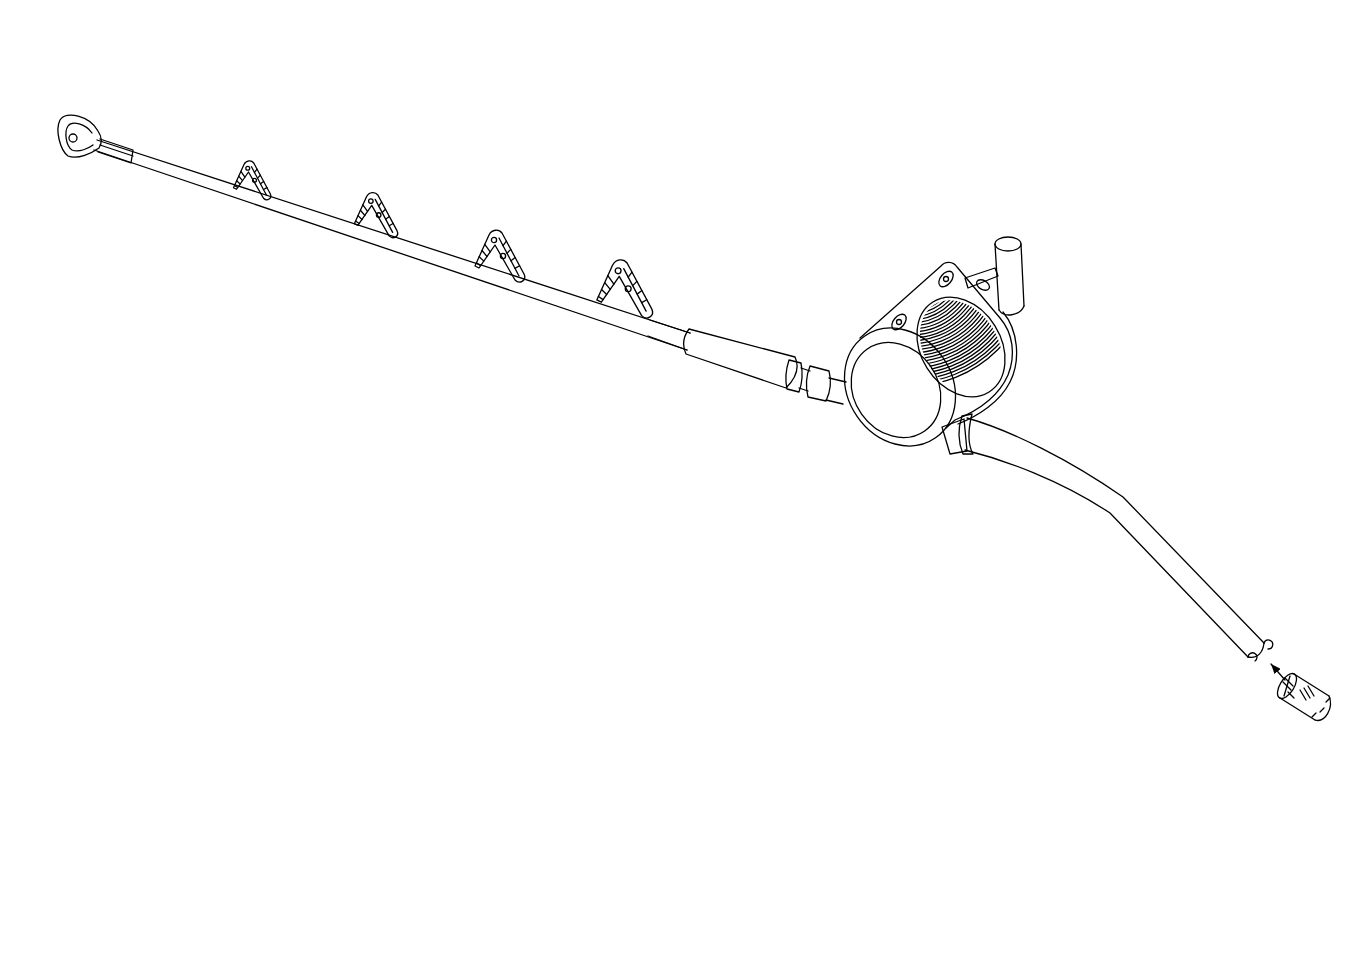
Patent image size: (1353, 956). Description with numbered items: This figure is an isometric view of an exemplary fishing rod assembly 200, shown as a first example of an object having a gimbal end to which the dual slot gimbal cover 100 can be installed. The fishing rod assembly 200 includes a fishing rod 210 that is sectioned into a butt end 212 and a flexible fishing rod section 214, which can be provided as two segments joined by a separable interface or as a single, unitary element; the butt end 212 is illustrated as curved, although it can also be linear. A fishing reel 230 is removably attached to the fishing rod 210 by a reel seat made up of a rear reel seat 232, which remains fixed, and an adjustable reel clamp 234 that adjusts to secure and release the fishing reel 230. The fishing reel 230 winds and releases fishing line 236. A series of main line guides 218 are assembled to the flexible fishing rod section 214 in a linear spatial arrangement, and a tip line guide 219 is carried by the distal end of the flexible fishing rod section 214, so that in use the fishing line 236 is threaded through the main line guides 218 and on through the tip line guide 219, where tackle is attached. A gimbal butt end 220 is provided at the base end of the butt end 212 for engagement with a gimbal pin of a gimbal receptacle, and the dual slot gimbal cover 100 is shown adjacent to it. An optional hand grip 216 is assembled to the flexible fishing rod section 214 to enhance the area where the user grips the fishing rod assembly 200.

The dual slot gimbal cover 100 is at (1281, 722).
The fishing rod assembly 200 is at (1072, 160).
The fishing rod 210 is at (592, 342).
The butt end 212 is at (1140, 547).
The flexible fishing rod section 214 is at (428, 258).
The hand grip 216 is at (730, 362).
The main line guides 218 is at (257, 172).
The tip line guide 219 is at (88, 124).
The gimbal butt end 220 is at (1240, 667).
The fishing reel 230 is at (910, 303).
The rear reel seat 232 is at (943, 445).
The adjustable reel clamp 234 is at (832, 405).
The fishing line 236 is at (1000, 308).